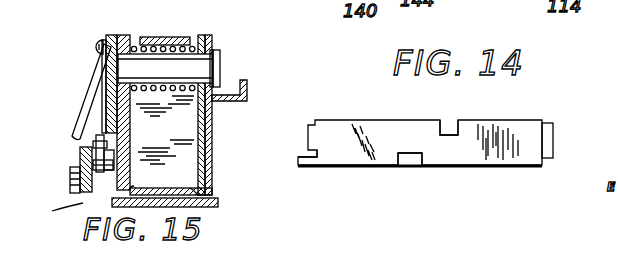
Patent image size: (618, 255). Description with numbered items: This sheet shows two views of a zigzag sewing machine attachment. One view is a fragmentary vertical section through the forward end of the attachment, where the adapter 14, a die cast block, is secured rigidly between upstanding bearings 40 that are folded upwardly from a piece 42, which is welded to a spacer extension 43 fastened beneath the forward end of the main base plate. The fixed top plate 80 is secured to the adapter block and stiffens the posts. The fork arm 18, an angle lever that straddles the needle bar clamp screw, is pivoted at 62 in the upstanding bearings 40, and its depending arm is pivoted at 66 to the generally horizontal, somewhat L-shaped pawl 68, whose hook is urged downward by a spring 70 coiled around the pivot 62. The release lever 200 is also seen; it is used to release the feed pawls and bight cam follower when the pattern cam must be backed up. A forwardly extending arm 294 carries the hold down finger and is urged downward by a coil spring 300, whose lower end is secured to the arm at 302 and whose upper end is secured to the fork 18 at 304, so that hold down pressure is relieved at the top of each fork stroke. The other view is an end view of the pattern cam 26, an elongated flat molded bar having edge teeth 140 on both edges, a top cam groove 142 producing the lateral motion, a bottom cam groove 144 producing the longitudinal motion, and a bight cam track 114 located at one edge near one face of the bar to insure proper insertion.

In FIG. 15, the adapter 14 is at (165, 130).
In FIG. 15, the fork arm 18 is at (121, 98).
In FIG. 14, the pattern cam 26 is at (402, 112).
In FIG. 15, the upstanding bearings 40 is at (206, 170).
In FIG. 15, the piece 42 is at (201, 192).
In FIG. 15, the spacer extension 43 is at (217, 204).
In FIG. 15, the pivot 62 is at (221, 63).
In FIG. 15, the pivot 66 is at (84, 112).
In FIG. 15, the pawl 68 is at (102, 72).
In FIG. 15, the spring 70 is at (133, 44).
In FIG. 15, the fixed top plate 80 is at (168, 36).
In FIG. 14, the bight cam track 114 is at (298, 160).
In FIG. 14, the edge teeth 140 is at (553, 144).
In FIG. 14, the top cam groove 142 is at (452, 120).
In FIG. 14, the bottom cam groove 144 is at (407, 168).
In FIG. 15, the release lever 200 is at (239, 105).
In FIG. 15, the forwardly extending arm 294 is at (52, 221).
In FIG. 15, the coil spring 300 is at (78, 118).
In FIG. 15, the spring attachment point 302 is at (70, 183).
In FIG. 15, the spring attachment point 304 is at (98, 48).